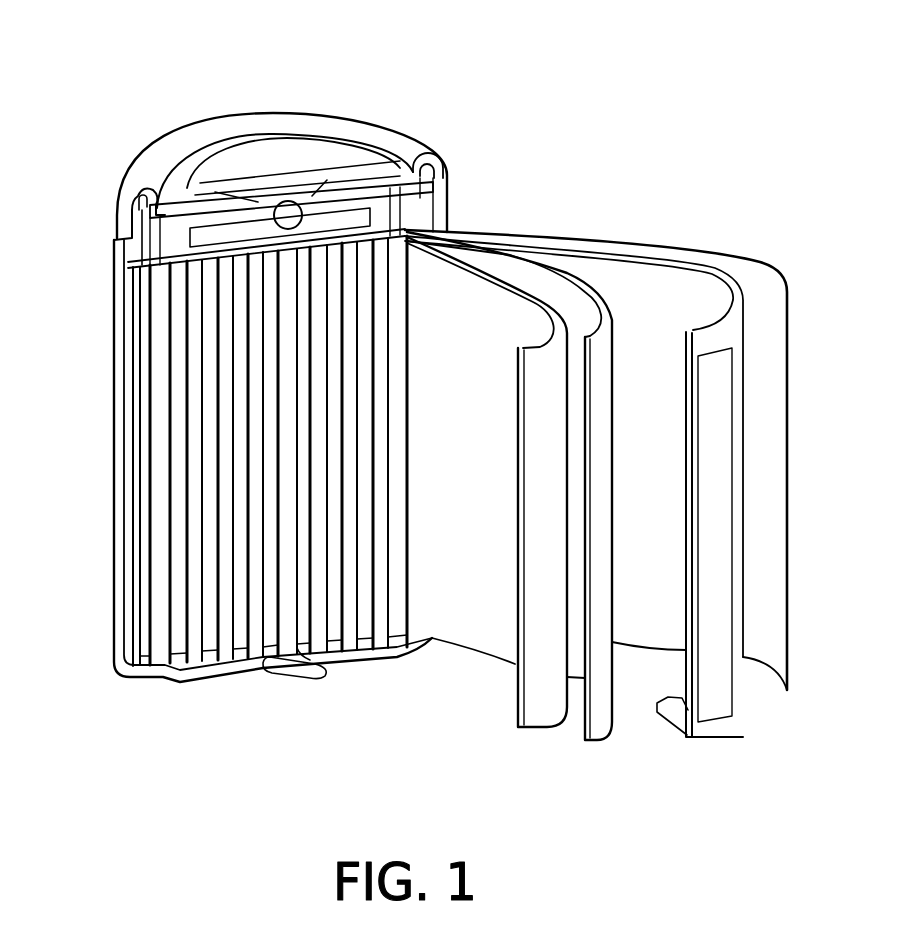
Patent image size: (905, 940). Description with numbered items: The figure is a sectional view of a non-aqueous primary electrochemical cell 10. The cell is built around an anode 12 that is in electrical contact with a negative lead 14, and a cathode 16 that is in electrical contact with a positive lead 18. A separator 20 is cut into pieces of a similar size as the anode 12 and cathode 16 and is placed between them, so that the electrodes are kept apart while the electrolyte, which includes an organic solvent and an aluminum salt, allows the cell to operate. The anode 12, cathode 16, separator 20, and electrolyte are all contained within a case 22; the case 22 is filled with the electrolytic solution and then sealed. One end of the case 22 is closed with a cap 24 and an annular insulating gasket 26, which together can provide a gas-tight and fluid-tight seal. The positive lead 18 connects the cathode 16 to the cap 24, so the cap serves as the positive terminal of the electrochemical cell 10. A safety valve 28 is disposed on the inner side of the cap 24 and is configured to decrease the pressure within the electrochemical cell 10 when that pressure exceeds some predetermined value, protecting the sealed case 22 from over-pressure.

The primary electrochemical cell 10 is at (664, 124).
The anode 12 is at (744, 676).
The negative lead 14 is at (713, 720).
The cathode 16 is at (544, 712).
The positive lead 18 is at (313, 222).
The separator 20 is at (613, 340).
The case 22 is at (127, 682).
The cap 24 is at (270, 157).
The annular insulating gasket 26 is at (134, 200).
The safety valve 28 is at (352, 190).